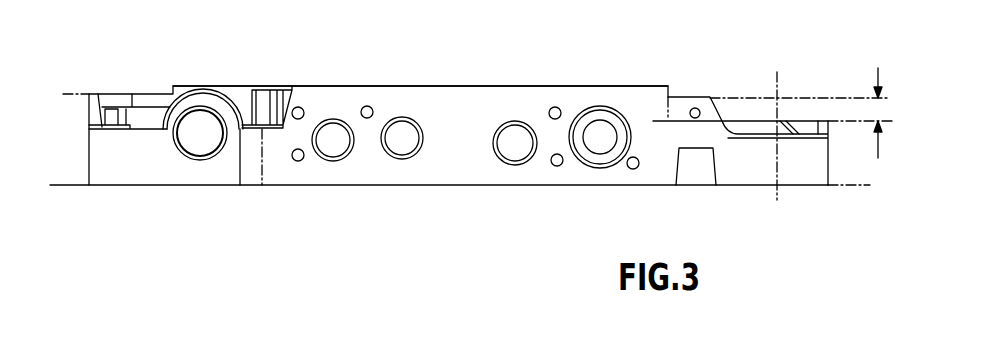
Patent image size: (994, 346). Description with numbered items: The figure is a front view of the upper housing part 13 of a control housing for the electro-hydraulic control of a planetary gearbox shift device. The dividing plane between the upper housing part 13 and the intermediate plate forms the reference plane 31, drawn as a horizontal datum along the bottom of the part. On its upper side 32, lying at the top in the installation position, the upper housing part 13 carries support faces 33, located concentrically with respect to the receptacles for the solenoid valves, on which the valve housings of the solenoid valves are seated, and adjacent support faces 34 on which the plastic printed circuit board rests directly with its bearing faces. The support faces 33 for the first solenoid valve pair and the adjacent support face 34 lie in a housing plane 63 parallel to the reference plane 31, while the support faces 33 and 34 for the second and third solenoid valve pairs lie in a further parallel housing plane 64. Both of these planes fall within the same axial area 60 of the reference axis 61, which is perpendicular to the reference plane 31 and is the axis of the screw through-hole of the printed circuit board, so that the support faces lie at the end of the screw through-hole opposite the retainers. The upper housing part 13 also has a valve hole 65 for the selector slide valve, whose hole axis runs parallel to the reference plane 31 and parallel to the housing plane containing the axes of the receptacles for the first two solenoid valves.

The upper housing part 13 is at (492, 86).
The reference plane 31 is at (70, 183).
The upper side 32 is at (382, 86).
The support faces 33 is at (97, 93).
The support faces 34 is at (145, 93).
The axial area 60 is at (883, 112).
The reference axis 61 is at (777, 90).
The housing plane 63 is at (76, 90).
The housing plane 64 is at (668, 97).
The valve hole 65 is at (210, 147).